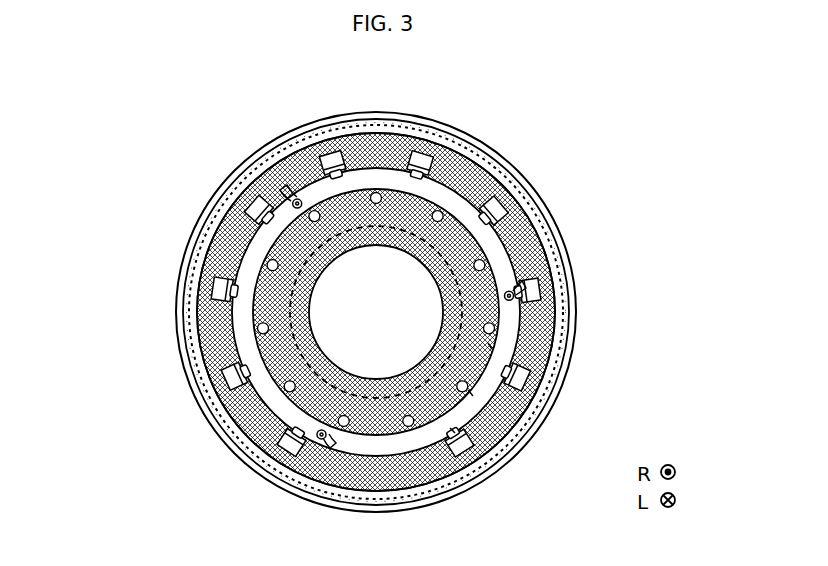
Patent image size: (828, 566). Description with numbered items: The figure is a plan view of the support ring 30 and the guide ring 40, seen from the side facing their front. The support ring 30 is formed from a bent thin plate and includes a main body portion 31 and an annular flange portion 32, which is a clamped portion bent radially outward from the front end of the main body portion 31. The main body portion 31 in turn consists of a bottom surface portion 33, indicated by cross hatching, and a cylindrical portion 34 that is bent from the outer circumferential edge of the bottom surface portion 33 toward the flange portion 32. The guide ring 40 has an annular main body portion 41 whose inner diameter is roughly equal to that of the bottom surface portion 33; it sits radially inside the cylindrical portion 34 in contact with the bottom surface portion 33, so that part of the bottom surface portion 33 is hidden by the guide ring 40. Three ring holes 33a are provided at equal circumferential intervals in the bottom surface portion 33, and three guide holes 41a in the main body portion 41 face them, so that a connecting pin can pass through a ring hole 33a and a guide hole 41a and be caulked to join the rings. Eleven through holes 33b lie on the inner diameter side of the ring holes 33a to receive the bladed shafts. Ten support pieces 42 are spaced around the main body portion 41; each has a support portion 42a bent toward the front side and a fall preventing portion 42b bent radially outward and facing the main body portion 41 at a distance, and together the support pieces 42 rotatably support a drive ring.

The support ring 30 is at (470, 123).
The main body portion 31 is at (535, 219).
The flange portion 32 is at (515, 167).
The bottom surface portion 33 is at (523, 232).
The ring hole 33a is at (284, 192).
The through hole 33b is at (490, 345).
The cylindrical portion 34 is at (531, 210).
The guide ring 40 is at (315, 177).
The main body portion 41 is at (283, 162).
The guide hole 41a is at (292, 201).
The support piece 42 is at (217, 279).
The support portion 42a is at (215, 300).
The fall preventing portion 42b is at (213, 268).